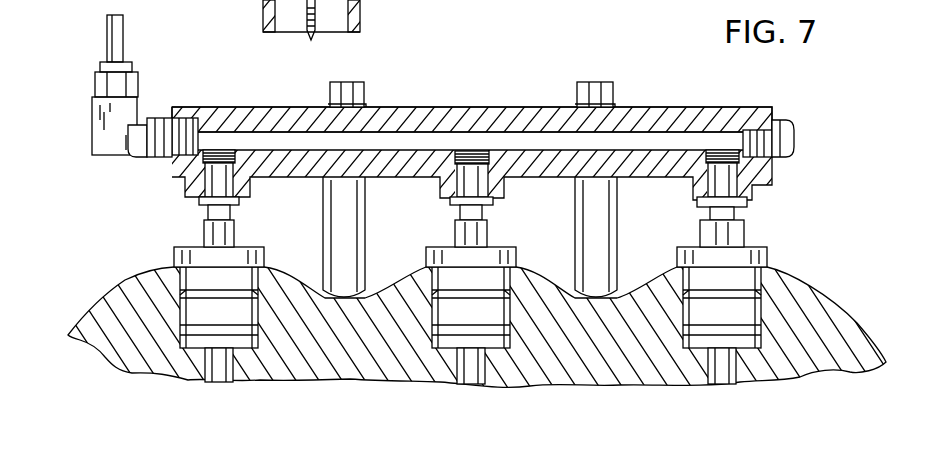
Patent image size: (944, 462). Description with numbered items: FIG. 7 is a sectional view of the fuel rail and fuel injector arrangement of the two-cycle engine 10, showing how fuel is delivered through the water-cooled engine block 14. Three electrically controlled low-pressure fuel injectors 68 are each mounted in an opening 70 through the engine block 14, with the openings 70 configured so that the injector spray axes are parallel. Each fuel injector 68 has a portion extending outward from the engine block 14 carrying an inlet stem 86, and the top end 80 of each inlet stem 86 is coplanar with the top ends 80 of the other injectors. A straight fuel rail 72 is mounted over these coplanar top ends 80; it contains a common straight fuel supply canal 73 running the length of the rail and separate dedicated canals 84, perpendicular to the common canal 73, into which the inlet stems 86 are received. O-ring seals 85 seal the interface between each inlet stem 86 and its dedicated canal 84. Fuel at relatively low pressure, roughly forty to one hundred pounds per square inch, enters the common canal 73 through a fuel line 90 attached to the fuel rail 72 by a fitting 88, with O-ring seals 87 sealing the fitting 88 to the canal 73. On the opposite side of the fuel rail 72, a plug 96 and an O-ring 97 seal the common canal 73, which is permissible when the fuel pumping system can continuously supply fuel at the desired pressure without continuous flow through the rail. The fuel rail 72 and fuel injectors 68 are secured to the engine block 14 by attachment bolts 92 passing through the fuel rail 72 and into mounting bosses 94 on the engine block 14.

The engine 10 is at (601, 42).
The engine block 14 is at (120, 344).
The fuel injector 68 is at (263, 256).
The opening 70 is at (257, 331).
The fuel rail 72 is at (733, 122).
The fuel supply canal 73 is at (735, 140).
The top end 80 is at (495, 128).
The dedicated canal 84 is at (249, 197).
The O-ring seal 85 is at (207, 162).
The inlet stem 86 is at (207, 190).
The O-ring seal 87 is at (168, 120).
The fitting 88 is at (103, 148).
The fuel line 90 is at (118, 45).
The attachment bolt 92 is at (353, 92).
The mounting boss 94 is at (361, 256).
The plug 96 is at (787, 143).
The O-ring 97 is at (790, 133).